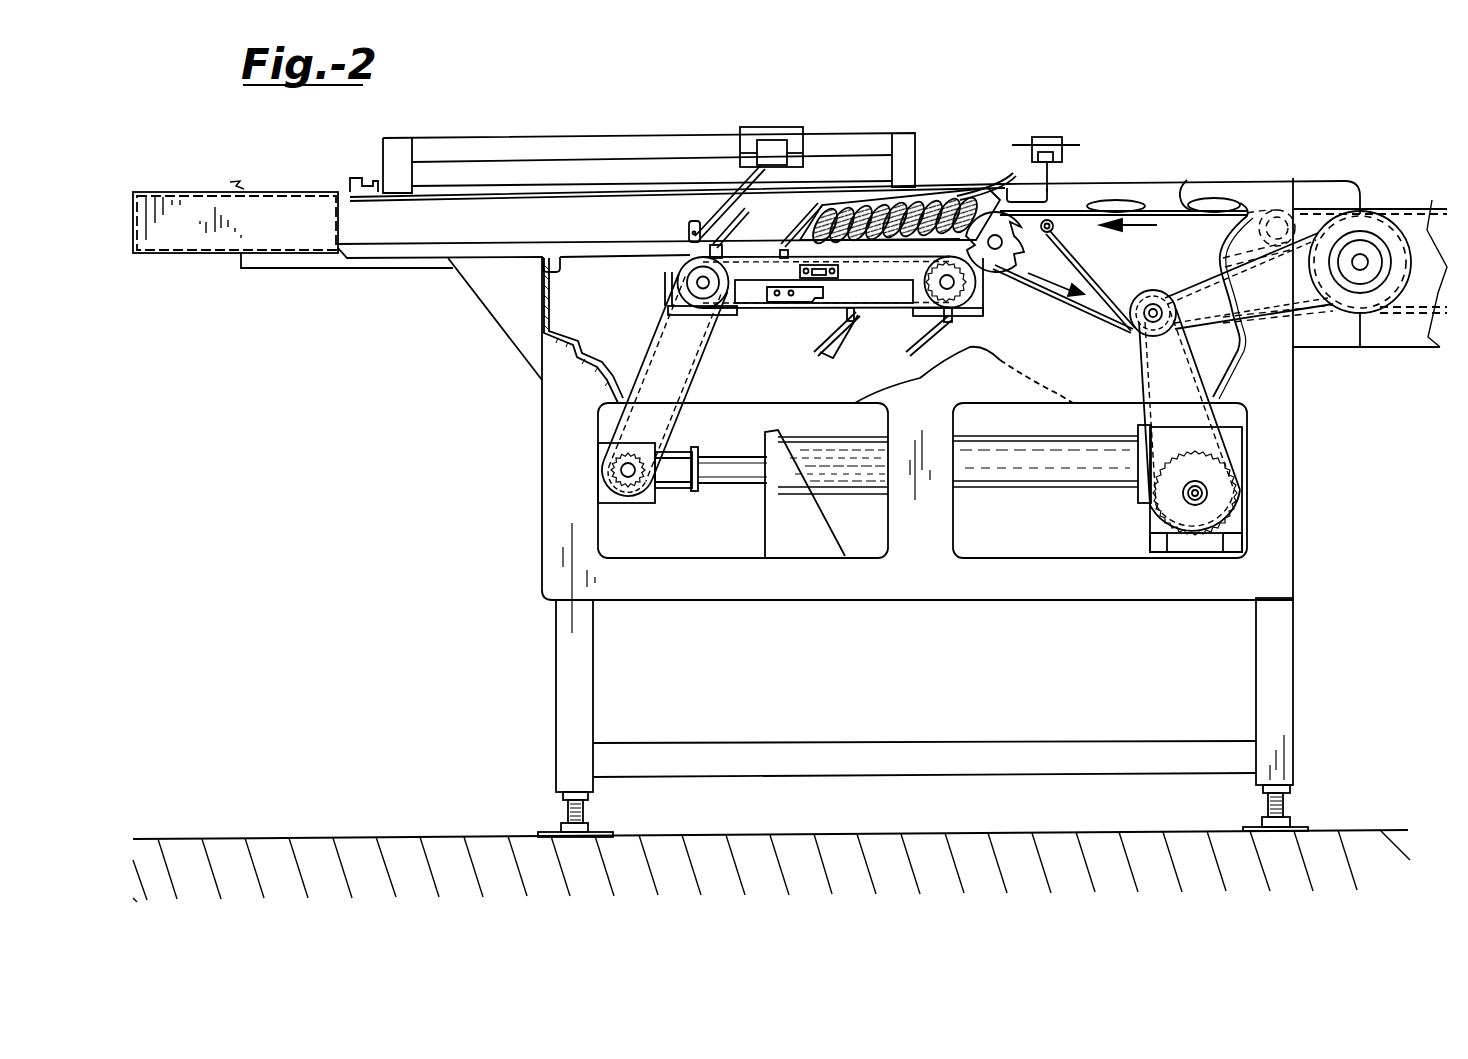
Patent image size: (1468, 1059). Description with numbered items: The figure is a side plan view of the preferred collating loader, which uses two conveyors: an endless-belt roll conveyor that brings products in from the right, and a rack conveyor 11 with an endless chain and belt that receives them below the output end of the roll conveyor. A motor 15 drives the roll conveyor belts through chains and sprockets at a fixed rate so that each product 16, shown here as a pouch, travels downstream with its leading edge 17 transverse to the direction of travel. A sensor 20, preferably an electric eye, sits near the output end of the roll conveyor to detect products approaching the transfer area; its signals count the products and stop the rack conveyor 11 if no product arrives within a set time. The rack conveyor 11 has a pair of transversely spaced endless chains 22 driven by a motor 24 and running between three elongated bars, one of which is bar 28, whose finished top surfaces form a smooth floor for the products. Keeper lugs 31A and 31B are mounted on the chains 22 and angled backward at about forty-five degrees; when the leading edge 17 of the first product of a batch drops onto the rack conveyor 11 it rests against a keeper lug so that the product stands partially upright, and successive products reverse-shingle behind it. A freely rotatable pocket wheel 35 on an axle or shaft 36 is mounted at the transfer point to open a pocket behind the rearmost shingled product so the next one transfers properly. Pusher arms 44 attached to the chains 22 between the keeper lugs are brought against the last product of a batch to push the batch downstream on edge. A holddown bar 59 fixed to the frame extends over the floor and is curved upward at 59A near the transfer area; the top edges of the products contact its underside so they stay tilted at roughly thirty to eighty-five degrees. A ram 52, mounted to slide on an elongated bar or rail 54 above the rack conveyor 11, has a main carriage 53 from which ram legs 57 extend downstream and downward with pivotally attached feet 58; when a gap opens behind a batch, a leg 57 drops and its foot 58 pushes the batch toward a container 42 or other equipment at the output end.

The rack conveyor 11 is at (765, 311).
The motor 15 is at (1233, 450).
The product 16 is at (1140, 202).
The leading edge 17 is at (1082, 208).
The sensor 20 is at (1043, 137).
The endless chains 22 is at (883, 312).
The motor 24 is at (630, 503).
The bar 28 is at (397, 240).
The keeper lug 31A is at (782, 249).
The keeper lug 31B is at (830, 360).
The pocket wheel 35 is at (992, 263).
The axle or shaft 36 is at (1053, 228).
The container 42 is at (159, 192).
The pusher arms 44 is at (717, 248).
The ram 52 is at (830, 100).
The main carriage 53 is at (806, 119).
The elongated bar or rail 54 is at (436, 137).
The ram legs 57 is at (700, 230).
The feet 58 is at (687, 233).
The holddown bar 59 is at (371, 178).
The upward bend of holddown bar 59A is at (1012, 175).